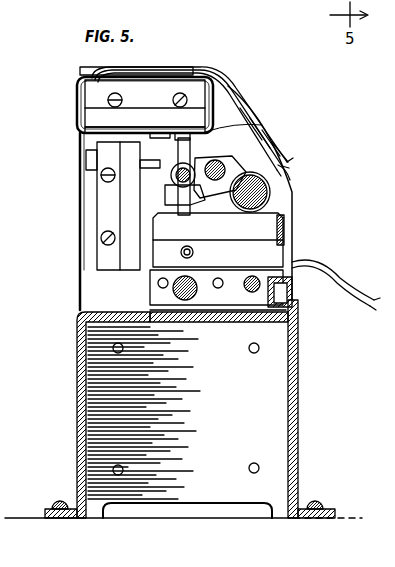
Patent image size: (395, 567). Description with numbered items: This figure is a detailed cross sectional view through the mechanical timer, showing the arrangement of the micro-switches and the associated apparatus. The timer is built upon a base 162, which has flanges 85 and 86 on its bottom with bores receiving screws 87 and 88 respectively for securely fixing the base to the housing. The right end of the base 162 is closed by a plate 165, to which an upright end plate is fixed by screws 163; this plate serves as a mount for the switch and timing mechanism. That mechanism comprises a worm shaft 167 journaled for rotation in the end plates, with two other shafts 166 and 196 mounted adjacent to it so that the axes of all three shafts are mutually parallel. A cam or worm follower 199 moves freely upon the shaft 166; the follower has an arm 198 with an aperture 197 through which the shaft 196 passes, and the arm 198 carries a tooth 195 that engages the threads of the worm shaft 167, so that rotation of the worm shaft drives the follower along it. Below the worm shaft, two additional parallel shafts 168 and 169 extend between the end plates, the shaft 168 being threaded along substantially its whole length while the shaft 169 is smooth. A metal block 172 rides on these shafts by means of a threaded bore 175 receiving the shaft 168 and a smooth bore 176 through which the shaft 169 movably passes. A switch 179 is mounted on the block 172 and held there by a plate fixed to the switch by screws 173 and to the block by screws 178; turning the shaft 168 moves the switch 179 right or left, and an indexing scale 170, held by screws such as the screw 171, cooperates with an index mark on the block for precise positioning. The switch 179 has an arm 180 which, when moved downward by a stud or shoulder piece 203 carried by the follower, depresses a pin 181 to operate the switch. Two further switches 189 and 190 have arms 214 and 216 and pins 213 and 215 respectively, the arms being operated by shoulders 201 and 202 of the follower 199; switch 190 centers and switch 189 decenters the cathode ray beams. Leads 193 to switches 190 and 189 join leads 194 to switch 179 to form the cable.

The flange 85 is at (330, 510).
The flange 86 is at (46, 512).
The screw 87 is at (316, 506).
The screw 88 is at (61, 505).
The base 162 is at (300, 440).
The screws 163 is at (249, 349).
The plate 165 is at (263, 407).
The shaft 166 is at (205, 160).
The worm shaft 167 is at (262, 190).
The shaft 168 is at (174, 292).
The shaft 169 is at (260, 280).
The indexing scale 170 is at (293, 297).
The screw 171 is at (292, 308).
The metal block 172 is at (246, 338).
The screws 173 is at (194, 253).
The threaded bore 175 is at (157, 283).
The smooth bore 176 is at (256, 270).
The screws 178 is at (212, 324).
The switch 179 is at (285, 222).
The arm 180 is at (218, 245).
The pin 181 is at (218, 227).
The switch 189 is at (145, 90).
The switch 190 is at (100, 205).
The leads 193 is at (77, 108).
The leads 194 is at (336, 285).
The tooth 195 is at (283, 170).
The shaft 196 is at (256, 134).
The aperture 197 is at (285, 150).
The arm 198 is at (276, 145).
The worm follower 199 is at (240, 124).
The shoulder 201 is at (232, 88).
The shoulder 202 is at (86, 158).
The shoulder piece 203 is at (203, 190).
The pin 213 is at (176, 136).
The arm 214 is at (160, 136).
The pin 215 is at (140, 163).
The arm 216 is at (140, 200).